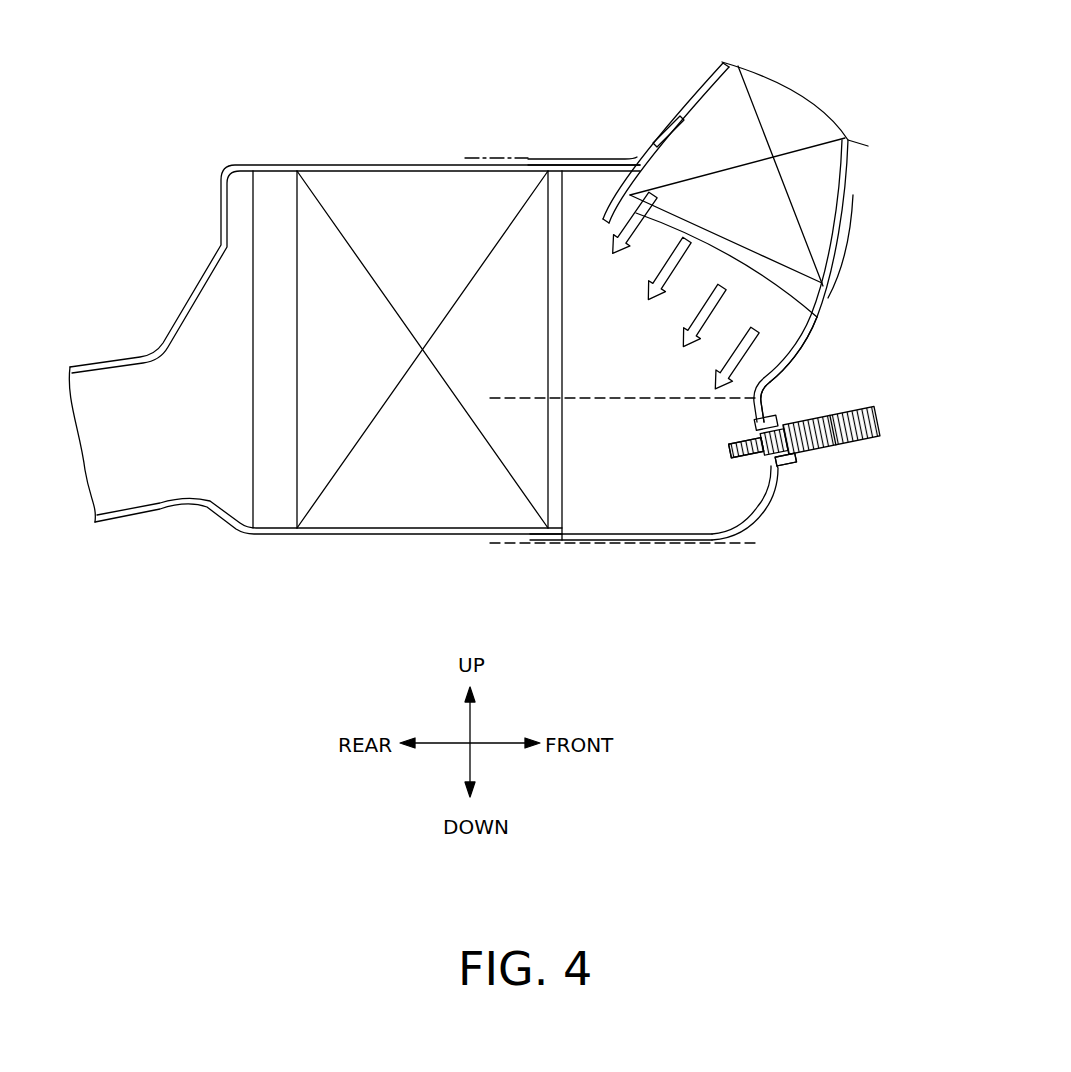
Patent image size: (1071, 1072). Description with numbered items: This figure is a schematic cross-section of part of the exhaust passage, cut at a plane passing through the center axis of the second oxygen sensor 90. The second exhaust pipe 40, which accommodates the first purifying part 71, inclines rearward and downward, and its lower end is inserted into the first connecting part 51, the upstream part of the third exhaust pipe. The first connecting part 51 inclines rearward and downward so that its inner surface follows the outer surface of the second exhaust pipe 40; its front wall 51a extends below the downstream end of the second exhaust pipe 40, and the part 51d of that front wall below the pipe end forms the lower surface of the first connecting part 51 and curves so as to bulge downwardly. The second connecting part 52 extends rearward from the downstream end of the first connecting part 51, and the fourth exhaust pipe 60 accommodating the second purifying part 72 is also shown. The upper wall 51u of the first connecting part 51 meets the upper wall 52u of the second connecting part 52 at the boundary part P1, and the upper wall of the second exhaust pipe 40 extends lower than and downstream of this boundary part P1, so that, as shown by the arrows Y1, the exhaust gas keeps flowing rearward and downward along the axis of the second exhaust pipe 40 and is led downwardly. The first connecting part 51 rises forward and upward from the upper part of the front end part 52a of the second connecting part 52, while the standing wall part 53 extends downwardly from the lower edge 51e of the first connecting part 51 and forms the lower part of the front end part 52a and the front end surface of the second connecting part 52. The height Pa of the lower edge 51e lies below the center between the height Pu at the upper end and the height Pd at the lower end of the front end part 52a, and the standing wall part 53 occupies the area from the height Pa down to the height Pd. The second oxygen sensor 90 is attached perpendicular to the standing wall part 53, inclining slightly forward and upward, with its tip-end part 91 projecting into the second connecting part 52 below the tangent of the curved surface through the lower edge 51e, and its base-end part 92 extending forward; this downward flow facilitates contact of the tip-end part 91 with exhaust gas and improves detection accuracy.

The second exhaust pipe 40 is at (850, 166).
The first connecting part 51 is at (853, 236).
The upper wall of the first connecting part 51u is at (672, 115).
The front wall of the first connecting part 51a is at (850, 252).
The curved part of the front wall 51d is at (805, 365).
The lower edge of the first connecting part 51e is at (768, 393).
The second connecting part 52 is at (600, 542).
The upper wall of the second connecting part 52u is at (573, 158).
The front end part of the second connecting part 52a is at (778, 524).
The standing wall part 53 is at (782, 476).
The fourth exhaust pipe 60 is at (468, 537).
The first purifying part 71 is at (788, 100).
The second purifying part 72 is at (405, 512).
The second oxygen sensor 90 is at (878, 420).
The tip-end part of the second oxygen sensor 91 is at (741, 462).
The base-end part of the second oxygen sensor 92 is at (815, 455).
The boundary part P1 is at (633, 157).
The height of the lower end of the first connecting part Pa is at (522, 396).
The height at the upper end of the front end part Pu is at (470, 158).
The height at the lower end of the front end part Pd is at (515, 544).
The exhaust gas flow arrows Y1 is at (723, 290).